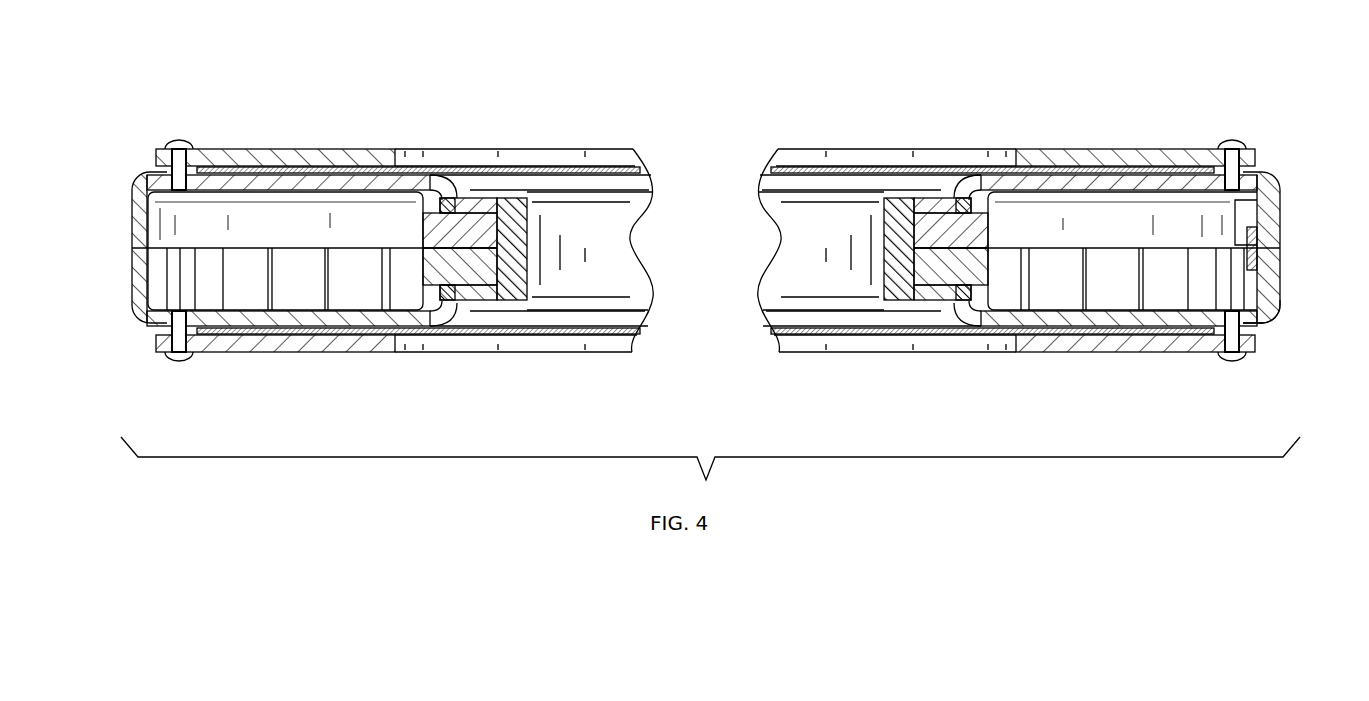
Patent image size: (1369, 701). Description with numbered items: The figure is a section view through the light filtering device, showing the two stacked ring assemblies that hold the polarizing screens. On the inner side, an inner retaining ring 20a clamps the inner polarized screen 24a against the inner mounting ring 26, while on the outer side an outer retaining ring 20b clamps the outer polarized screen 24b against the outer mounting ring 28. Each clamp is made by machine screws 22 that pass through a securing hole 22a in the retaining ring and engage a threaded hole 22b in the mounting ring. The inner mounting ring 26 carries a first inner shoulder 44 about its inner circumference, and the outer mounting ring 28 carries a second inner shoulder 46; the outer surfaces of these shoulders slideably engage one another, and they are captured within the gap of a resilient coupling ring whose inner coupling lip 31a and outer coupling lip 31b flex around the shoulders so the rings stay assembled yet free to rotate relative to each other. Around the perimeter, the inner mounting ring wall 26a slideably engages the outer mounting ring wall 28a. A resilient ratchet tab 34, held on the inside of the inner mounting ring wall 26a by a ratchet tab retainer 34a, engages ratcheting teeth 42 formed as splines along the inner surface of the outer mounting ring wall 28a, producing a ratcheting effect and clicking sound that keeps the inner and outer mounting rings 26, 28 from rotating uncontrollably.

The inner retaining ring 20a is at (510, 152).
The outer retaining ring 20b is at (510, 345).
The machine screw 22 is at (181, 138).
The securing hole 22a is at (190, 152).
The threaded hole 22b is at (246, 155).
The inner polarized screen 24a is at (570, 152).
The outer polarized screen 24b is at (555, 340).
The inner mounting ring 26 is at (318, 160).
The inner mounting ring wall 26a is at (130, 217).
The outer mounting ring 28 is at (300, 335).
The outer mounting ring wall 28a is at (130, 273).
The inner coupling lip 31a is at (445, 205).
The outer coupling lip 31b is at (448, 298).
The ratchet tab 34 is at (1258, 263).
The ratchet tab retainer 34a is at (1265, 207).
The ratcheting teeth 42 is at (1283, 320).
The first inner shoulder 44 is at (470, 235).
The second inner shoulder 46 is at (470, 275).